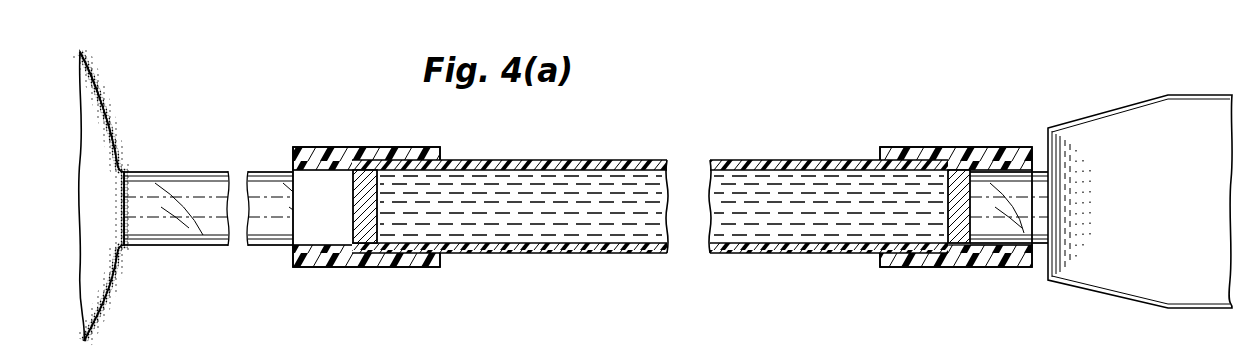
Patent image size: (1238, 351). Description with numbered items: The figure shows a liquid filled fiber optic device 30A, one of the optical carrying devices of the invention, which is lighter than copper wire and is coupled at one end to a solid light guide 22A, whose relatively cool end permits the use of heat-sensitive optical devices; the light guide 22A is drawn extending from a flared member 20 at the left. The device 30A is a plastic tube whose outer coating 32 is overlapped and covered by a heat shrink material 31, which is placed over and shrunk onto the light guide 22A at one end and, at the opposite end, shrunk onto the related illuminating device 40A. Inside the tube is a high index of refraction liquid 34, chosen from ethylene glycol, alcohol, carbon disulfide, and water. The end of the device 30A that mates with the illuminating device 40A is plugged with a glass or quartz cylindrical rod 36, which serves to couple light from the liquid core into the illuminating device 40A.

The light source reflector/horn 20 is at (130, 112).
The light guide 22A is at (270, 170).
The liquid filled fiber optic device 30A is at (722, 133).
The heat shrink material 31 is at (395, 148).
The outer coating 32 is at (553, 160).
The high index of refraction liquid 34 is at (508, 230).
The cylindrical rod 36 is at (364, 176).
The illuminating device 40A is at (1076, 121).